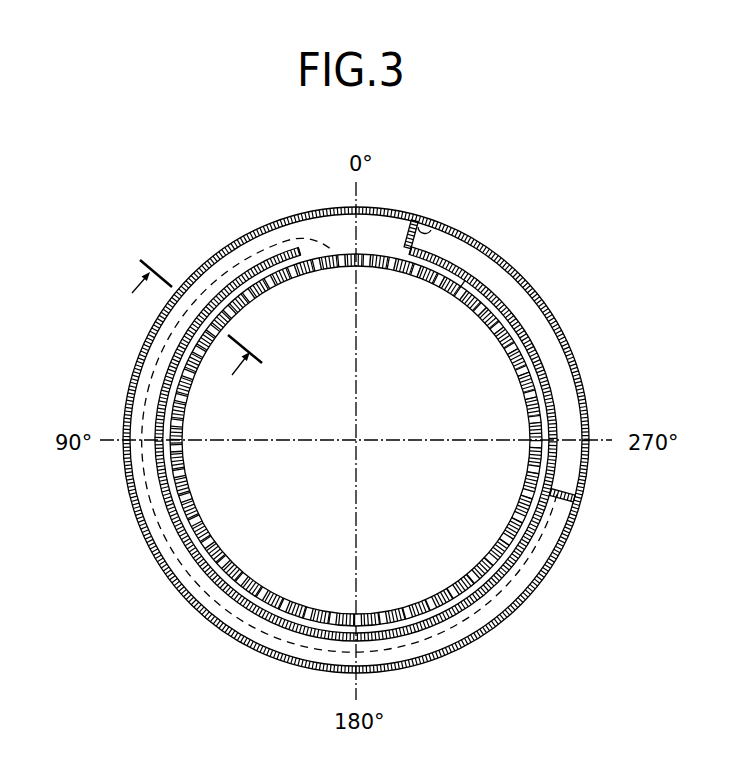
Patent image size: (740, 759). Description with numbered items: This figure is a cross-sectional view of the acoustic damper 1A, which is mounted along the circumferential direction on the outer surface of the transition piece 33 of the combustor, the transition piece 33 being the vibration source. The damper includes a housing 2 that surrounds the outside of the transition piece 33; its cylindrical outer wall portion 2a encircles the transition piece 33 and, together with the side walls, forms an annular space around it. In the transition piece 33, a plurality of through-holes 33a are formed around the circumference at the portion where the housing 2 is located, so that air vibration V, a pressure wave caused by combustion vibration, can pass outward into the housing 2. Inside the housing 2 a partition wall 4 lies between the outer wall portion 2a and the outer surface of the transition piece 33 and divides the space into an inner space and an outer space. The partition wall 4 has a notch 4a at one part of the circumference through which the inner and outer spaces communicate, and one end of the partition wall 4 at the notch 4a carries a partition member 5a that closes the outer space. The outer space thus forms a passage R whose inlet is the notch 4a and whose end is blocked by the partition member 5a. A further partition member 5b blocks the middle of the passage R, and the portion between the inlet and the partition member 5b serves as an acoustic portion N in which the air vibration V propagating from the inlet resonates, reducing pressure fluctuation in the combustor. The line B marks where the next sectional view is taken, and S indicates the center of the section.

The acoustic damper 1A is at (356, 417).
The housing 2 is at (356, 417).
The outer wall portion 2a is at (307, 225).
The partition wall 4 is at (356, 404).
The notch 4a is at (343, 242).
The transition piece 33 is at (356, 398).
The through-hole 33a is at (451, 282).
The partition member 5a is at (433, 228).
The partition member 5b is at (561, 512).
The air vibration V is at (163, 343).
The line B- B is at (188, 328).
The center axis S is at (359, 438).
The acoustic portion N is at (196, 574).
The passage R is at (224, 620).